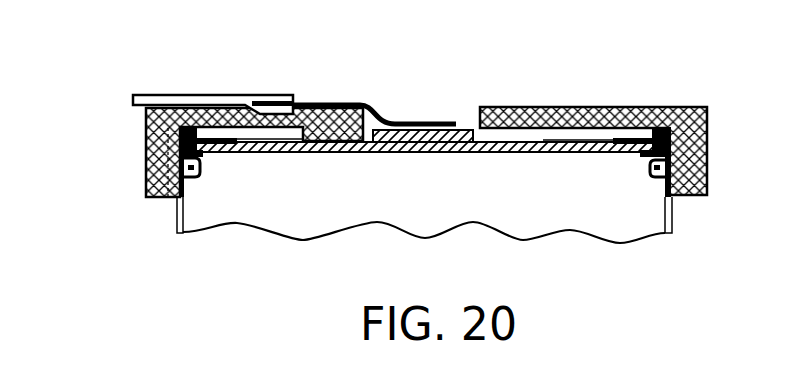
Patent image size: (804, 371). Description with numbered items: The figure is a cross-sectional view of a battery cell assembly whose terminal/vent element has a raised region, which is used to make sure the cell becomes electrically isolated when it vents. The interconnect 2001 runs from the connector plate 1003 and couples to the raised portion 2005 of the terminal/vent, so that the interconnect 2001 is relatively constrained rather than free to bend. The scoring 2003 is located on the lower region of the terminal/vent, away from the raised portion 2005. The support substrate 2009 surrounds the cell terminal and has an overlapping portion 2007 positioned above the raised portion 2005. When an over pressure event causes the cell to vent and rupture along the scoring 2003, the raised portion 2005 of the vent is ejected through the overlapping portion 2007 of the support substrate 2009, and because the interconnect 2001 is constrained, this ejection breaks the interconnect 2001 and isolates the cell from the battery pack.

The connector plate 1003 is at (173, 97).
The interconnect 2001 is at (360, 103).
The scoring 2003 is at (353, 167).
The raised portion 2005 is at (460, 116).
The overlapping portion 2007 is at (500, 99).
The support substrate 2009 is at (146, 125).